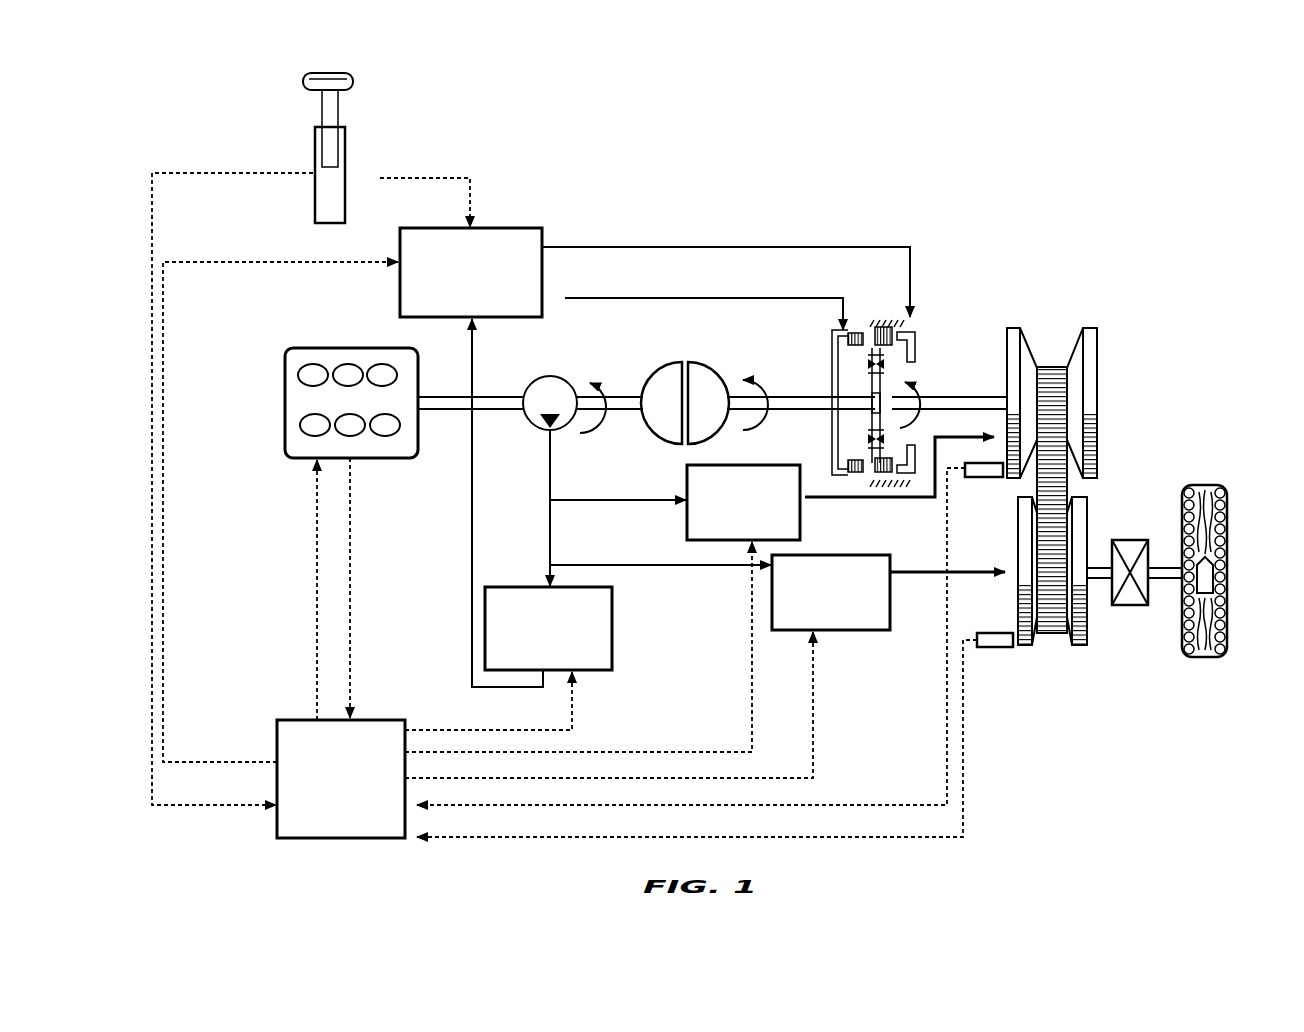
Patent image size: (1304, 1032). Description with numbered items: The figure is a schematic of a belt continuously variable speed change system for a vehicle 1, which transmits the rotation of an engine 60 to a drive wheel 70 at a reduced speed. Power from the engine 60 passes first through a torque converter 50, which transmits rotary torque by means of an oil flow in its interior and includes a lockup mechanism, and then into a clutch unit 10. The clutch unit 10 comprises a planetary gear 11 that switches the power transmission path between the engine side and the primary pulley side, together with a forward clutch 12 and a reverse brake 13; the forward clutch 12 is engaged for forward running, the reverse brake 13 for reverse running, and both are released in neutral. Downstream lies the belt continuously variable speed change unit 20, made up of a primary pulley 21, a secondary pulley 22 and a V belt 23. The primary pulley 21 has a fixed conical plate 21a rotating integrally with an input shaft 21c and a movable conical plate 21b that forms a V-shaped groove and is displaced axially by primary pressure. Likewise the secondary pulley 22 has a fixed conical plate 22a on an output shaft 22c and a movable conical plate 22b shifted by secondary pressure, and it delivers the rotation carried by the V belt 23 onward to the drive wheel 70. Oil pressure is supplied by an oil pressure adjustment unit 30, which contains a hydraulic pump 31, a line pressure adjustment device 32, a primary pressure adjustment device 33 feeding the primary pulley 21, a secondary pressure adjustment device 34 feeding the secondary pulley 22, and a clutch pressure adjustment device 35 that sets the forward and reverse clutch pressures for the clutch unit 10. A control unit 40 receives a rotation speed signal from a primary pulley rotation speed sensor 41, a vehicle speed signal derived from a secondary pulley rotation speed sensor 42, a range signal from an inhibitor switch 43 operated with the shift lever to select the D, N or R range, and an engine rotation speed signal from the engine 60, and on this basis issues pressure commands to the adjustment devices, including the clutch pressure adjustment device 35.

The belt continuously variable speed change system for a vehicle 1 is at (1093, 102).
The clutch unit 10 is at (827, 350).
The planetary gear 11 is at (870, 343).
The forward clutch 12 is at (845, 336).
The reverse brake 13 is at (912, 331).
The belt continuously variable speed change unit 20 is at (1047, 261).
The primary pulley 21 is at (1091, 375).
The fixed conical plate 21a is at (1090, 327).
The movable conical plate 21b is at (1012, 327).
The input shaft 21c is at (978, 396).
The secondary pulley 22 is at (1126, 604).
The fixed conical plate 22a is at (1025, 650).
The movable conical plate 22b is at (1082, 650).
The output shaft 22c is at (1134, 600).
The V belt 23 is at (1090, 490).
The oil pressure adjustment unit 30 is at (710, 614).
The hydraulic pump 31 is at (547, 378).
The line pressure adjustment device 32 is at (613, 637).
The primary pressure adjustment device 33 is at (687, 489).
The secondary pressure adjustment device 34 is at (867, 632).
The clutch pressure adjustment device 35 is at (452, 228).
The control unit 40 is at (303, 718).
The primary pulley rotation speed sensor 41 is at (960, 490).
The secondary pulley rotation speed sensor 42 is at (992, 650).
The inhibitor switch 43 is at (315, 197).
The torque converter 50 is at (732, 361).
The engine 60 is at (339, 346).
The drive wheel 70 is at (1238, 488).